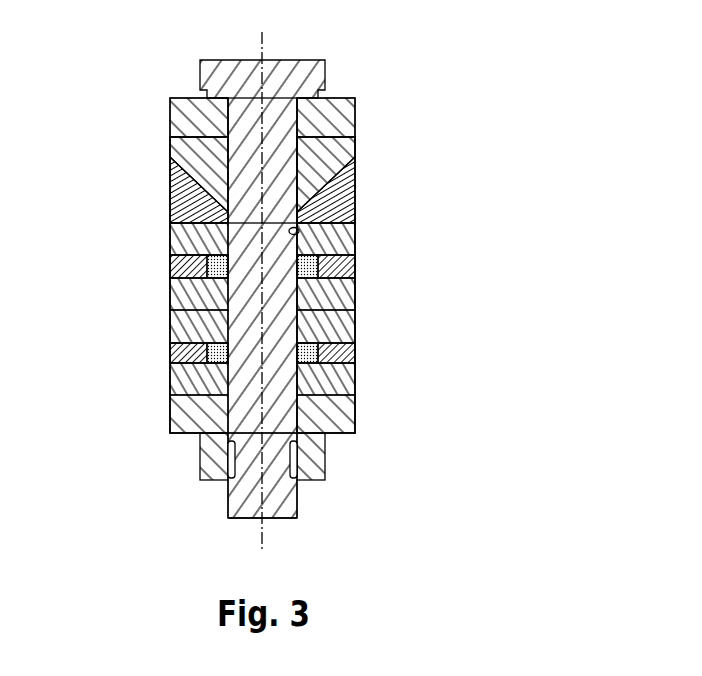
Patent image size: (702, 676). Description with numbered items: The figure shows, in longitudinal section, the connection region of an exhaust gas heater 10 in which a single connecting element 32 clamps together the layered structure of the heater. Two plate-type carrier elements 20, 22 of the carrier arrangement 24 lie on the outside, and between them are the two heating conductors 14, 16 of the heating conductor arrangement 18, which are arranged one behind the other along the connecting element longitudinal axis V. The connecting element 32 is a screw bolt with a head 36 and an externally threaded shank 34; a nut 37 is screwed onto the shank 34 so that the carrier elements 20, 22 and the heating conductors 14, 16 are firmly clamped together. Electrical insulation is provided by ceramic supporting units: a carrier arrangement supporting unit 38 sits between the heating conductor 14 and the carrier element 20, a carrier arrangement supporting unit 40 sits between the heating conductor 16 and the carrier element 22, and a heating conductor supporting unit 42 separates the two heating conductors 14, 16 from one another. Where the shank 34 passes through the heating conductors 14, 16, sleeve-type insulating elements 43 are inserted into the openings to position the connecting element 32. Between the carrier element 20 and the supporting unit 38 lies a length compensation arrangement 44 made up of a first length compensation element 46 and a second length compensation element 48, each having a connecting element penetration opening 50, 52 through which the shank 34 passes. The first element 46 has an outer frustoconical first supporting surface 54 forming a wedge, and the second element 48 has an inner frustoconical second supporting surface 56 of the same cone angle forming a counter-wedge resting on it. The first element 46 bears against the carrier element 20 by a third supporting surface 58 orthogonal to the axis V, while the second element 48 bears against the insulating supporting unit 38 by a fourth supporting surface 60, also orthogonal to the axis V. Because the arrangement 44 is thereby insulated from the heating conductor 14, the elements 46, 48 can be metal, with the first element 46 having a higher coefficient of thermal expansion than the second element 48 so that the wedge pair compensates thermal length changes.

The exhaust gas heater 10 is at (534, 73).
The heating conductor 14 is at (320, 268).
The heating conductor 16 is at (320, 353).
The heating conductor arrangement 18 is at (412, 323).
The carrier element 20 is at (342, 98).
The carrier element 22 is at (355, 412).
The carrier arrangement 24 is at (120, 100).
The connecting element 32 is at (235, 523).
The externally threaded shank 34 is at (297, 495).
The head 36 is at (242, 80).
The nut 37 is at (326, 458).
The carrier arrangement supporting unit 38 is at (170, 235).
The carrier arrangement supporting unit 40 is at (170, 378).
The heating conductor supporting unit 42 is at (170, 295).
The sleeve-type insulating element 43 is at (352, 258).
The length compensation arrangement 44 is at (170, 183).
The first length compensation element 46 is at (168, 147).
The second length compensation element 48 is at (358, 192).
The connecting element penetration opening 50 is at (285, 150).
The connecting element penetration opening 52 is at (345, 229).
The first supporting surface 54 is at (340, 160).
The second supporting surface 56 is at (183, 148).
The third supporting surface 58 is at (203, 130).
The fourth supporting surface 60 is at (177, 247).
The connecting element longitudinal axis V is at (264, 532).